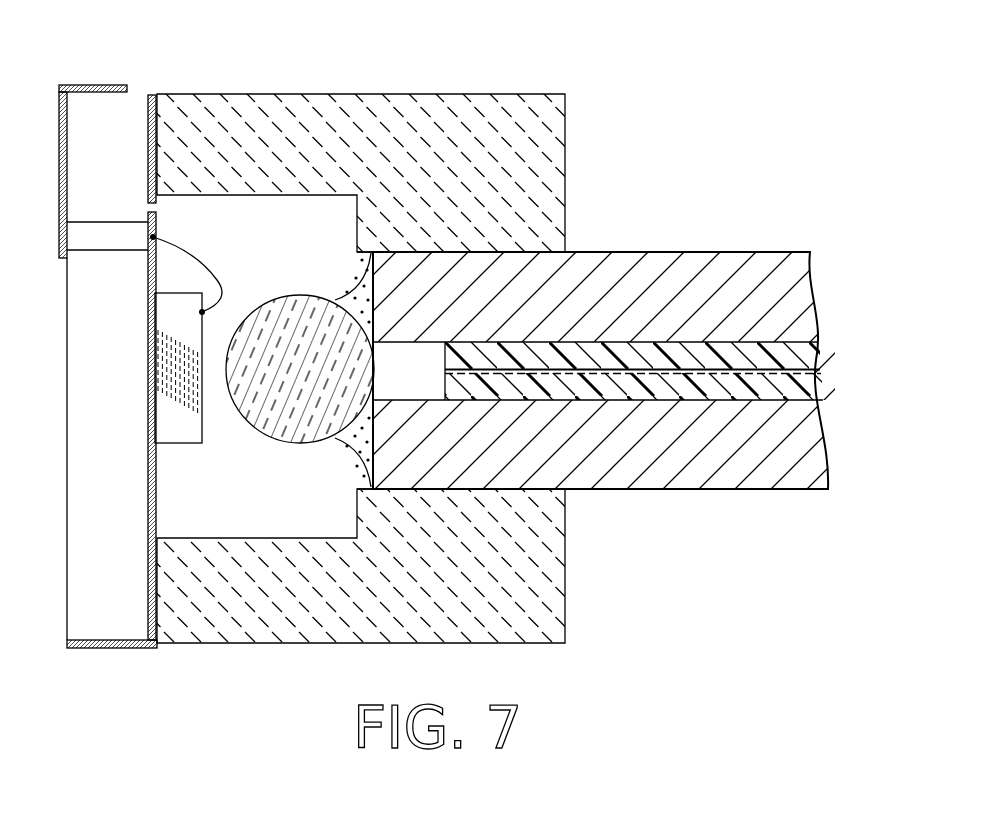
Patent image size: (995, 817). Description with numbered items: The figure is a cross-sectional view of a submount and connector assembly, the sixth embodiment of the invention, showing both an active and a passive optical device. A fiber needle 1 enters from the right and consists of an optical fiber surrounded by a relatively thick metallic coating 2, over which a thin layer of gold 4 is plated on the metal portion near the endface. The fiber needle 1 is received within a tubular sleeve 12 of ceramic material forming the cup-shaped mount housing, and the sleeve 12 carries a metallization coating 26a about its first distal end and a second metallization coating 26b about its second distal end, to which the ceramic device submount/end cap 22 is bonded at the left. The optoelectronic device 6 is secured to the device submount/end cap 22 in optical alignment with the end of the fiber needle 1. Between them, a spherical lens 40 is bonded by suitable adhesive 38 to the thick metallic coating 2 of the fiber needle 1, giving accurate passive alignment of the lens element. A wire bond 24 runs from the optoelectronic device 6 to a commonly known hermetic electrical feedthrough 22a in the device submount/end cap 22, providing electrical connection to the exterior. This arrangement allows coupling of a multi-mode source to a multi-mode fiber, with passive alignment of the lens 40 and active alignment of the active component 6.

The metallized fiber 1 is at (641, 395).
The metal layer 2 is at (693, 256).
The thin layer of gold 4 is at (598, 253).
The optoelectronic device 6 is at (175, 433).
The tubular sleeve 12 is at (364, 94).
The device submount/end cap 22 is at (112, 453).
The hermetic electrical feedthrough 22a is at (98, 243).
The wire bond 24 is at (173, 248).
The metallization coating 26a is at (103, 85).
The second metallization coating 26b is at (100, 648).
The adhesive 38 is at (358, 446).
The spherical lens 40 is at (291, 312).